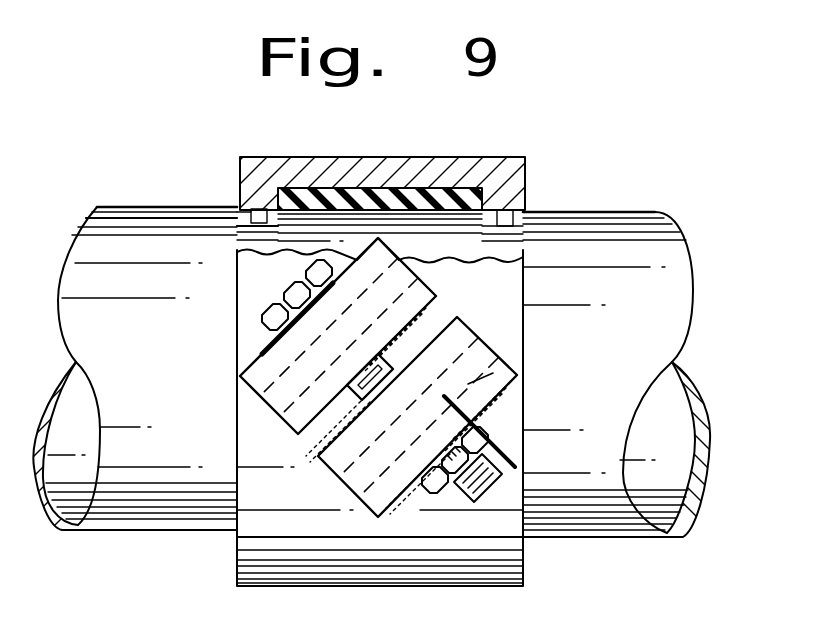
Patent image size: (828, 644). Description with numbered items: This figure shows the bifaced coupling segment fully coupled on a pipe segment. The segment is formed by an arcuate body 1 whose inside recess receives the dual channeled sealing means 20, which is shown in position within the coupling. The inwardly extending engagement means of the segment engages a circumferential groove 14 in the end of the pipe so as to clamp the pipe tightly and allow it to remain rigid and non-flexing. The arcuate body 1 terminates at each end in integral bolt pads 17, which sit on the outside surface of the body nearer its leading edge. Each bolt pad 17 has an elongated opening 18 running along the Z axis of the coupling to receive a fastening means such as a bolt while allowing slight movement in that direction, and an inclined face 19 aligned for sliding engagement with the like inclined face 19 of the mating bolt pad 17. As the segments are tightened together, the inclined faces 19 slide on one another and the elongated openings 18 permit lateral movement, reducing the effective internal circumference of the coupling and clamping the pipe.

The arcuate body 1 is at (560, 143).
The circumferential groove 14 is at (247, 210).
The bolt pad 17 is at (497, 337).
The elongated opening 18 is at (523, 362).
The inclined face 19 is at (250, 343).
The dual channeled sealing means 20 is at (378, 202).